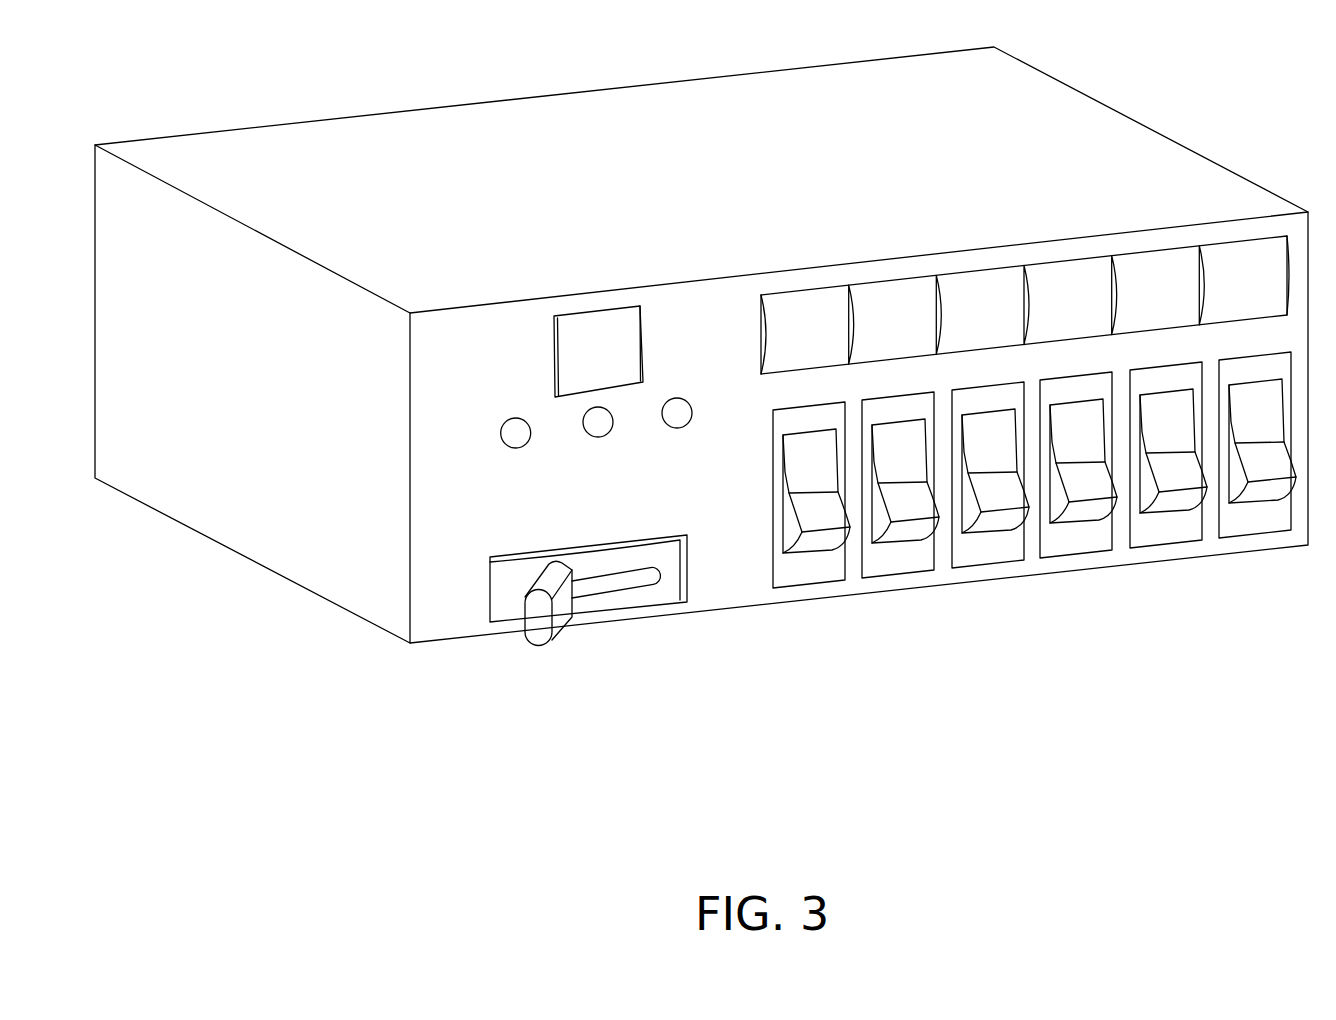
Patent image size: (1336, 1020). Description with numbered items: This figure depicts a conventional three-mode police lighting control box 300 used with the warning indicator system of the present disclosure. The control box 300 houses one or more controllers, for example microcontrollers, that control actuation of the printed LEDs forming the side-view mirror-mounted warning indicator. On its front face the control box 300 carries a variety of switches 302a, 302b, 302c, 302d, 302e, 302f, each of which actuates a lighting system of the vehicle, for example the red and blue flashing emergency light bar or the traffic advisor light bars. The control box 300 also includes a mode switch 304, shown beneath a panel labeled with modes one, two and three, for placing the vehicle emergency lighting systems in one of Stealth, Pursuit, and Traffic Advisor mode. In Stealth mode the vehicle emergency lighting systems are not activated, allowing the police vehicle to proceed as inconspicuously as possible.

The police lighting control box 300 is at (1180, 102).
The switch 302a is at (826, 549).
The switch 302b is at (915, 539).
The switch 302c is at (1005, 529).
The switch 302d is at (1093, 519).
The switch 302e is at (1183, 509).
The switch 302f is at (1272, 499).
The mode switch 304 is at (538, 636).